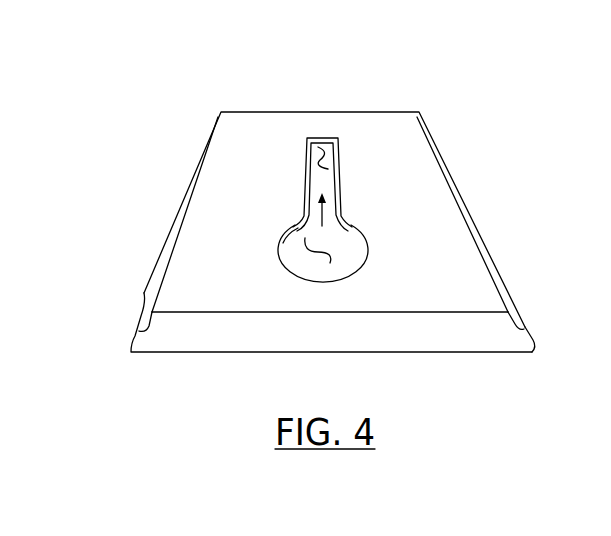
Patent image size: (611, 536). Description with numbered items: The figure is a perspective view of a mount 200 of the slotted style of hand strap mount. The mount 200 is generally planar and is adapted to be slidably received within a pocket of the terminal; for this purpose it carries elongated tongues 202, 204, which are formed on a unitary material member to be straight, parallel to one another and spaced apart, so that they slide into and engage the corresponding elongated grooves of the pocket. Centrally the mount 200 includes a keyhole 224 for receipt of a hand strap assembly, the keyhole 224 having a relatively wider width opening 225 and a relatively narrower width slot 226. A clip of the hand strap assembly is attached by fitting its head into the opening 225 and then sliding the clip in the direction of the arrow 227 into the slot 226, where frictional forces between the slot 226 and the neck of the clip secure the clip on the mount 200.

The mount 200 is at (377, 92).
The elongated tongue 202 is at (146, 292).
The elongated tongue 204 is at (510, 277).
The keyhole 224 is at (336, 240).
The opening 225 is at (325, 258).
The slot 226 is at (312, 158).
The arrow 227 is at (322, 222).